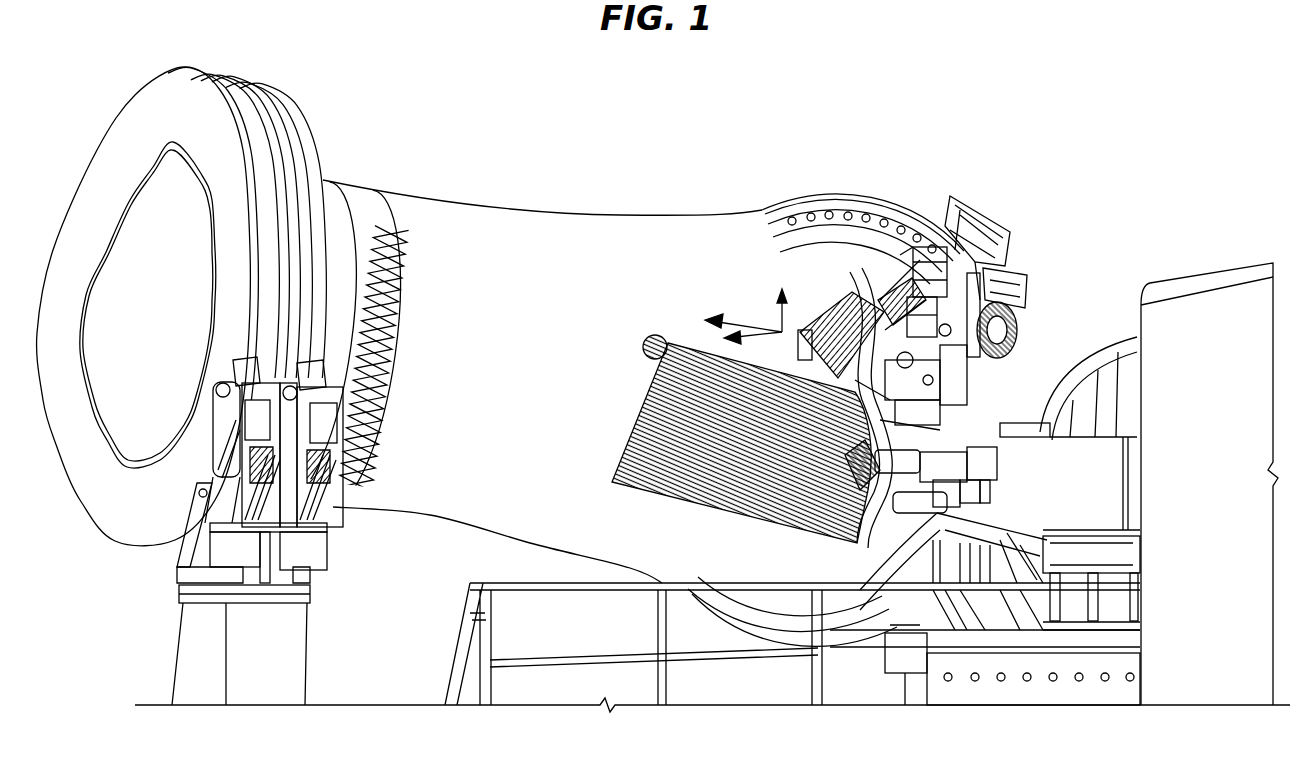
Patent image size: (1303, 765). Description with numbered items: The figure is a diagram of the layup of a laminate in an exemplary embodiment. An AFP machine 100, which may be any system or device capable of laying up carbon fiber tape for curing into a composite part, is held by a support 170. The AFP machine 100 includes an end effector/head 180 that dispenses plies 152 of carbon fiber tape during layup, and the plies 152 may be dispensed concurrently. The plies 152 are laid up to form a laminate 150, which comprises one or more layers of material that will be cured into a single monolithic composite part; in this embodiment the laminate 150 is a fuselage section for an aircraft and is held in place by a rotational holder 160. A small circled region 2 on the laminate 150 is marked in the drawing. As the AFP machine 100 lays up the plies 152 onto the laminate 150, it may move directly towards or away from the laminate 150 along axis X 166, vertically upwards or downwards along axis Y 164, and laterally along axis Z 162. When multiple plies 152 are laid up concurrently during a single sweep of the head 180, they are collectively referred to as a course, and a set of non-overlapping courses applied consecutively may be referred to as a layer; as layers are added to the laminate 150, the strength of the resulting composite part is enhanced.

The AFP machine 100 is at (1112, 238).
The laminate 150 is at (602, 236).
The plies 152 is at (637, 419).
The detail region 2 is at (640, 338).
The rotational holder 160 is at (205, 665).
The axis Z 162 is at (742, 322).
The axis Y 164 is at (790, 322).
The axis X 166 is at (759, 335).
The support 170 is at (1028, 442).
The end effector/head 180 is at (833, 318).